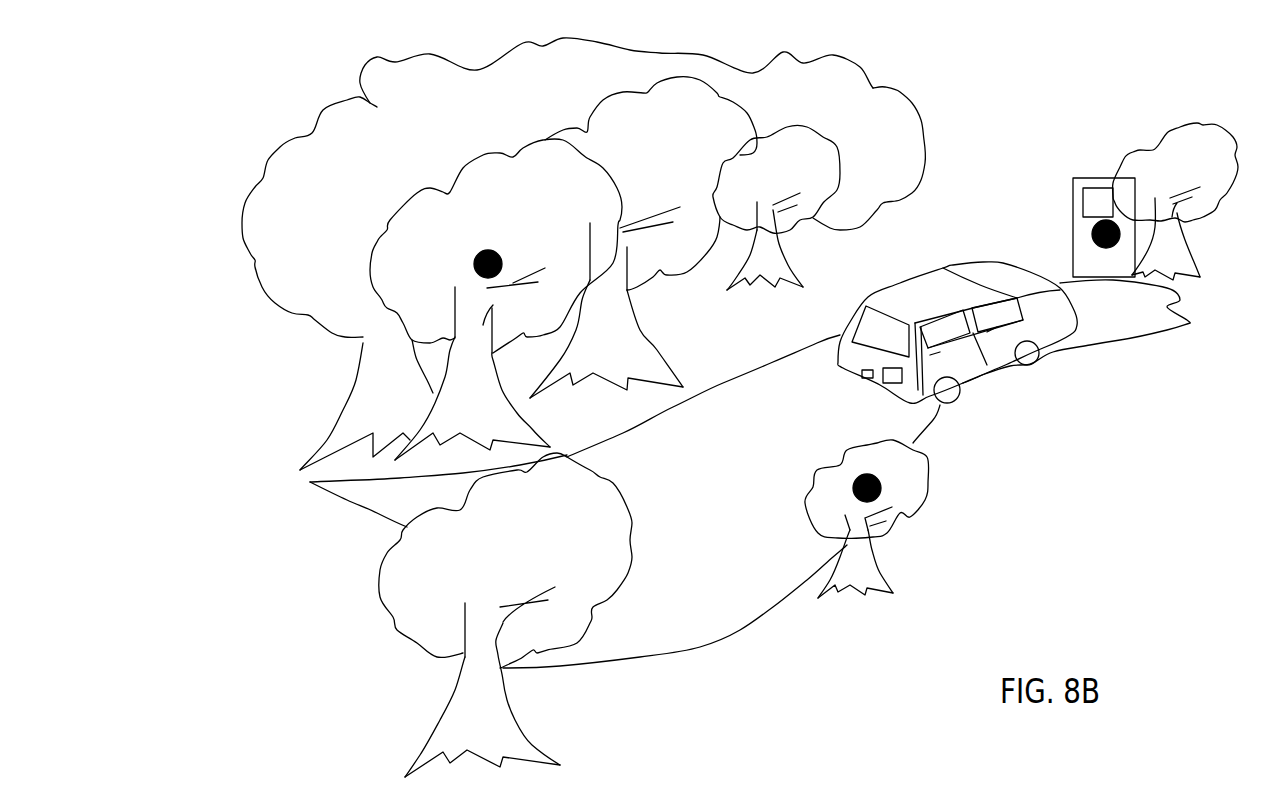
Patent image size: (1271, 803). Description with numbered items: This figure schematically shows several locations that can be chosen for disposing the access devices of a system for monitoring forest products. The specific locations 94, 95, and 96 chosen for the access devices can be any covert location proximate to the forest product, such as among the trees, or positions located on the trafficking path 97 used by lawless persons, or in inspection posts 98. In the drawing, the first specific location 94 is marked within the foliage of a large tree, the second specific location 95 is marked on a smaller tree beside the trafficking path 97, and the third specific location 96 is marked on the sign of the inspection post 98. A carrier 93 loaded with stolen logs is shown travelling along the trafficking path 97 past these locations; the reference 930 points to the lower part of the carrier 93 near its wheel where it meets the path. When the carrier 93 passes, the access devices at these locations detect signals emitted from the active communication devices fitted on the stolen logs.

The carrier 93 is at (1014, 352).
The vehicle wheel / road edge 930 is at (940, 413).
The specific location 94 is at (488, 263).
The specific location 95 is at (880, 500).
The specific location 96 is at (1106, 248).
The trafficking path 97 is at (719, 501).
The inspection post 98 is at (1108, 270).